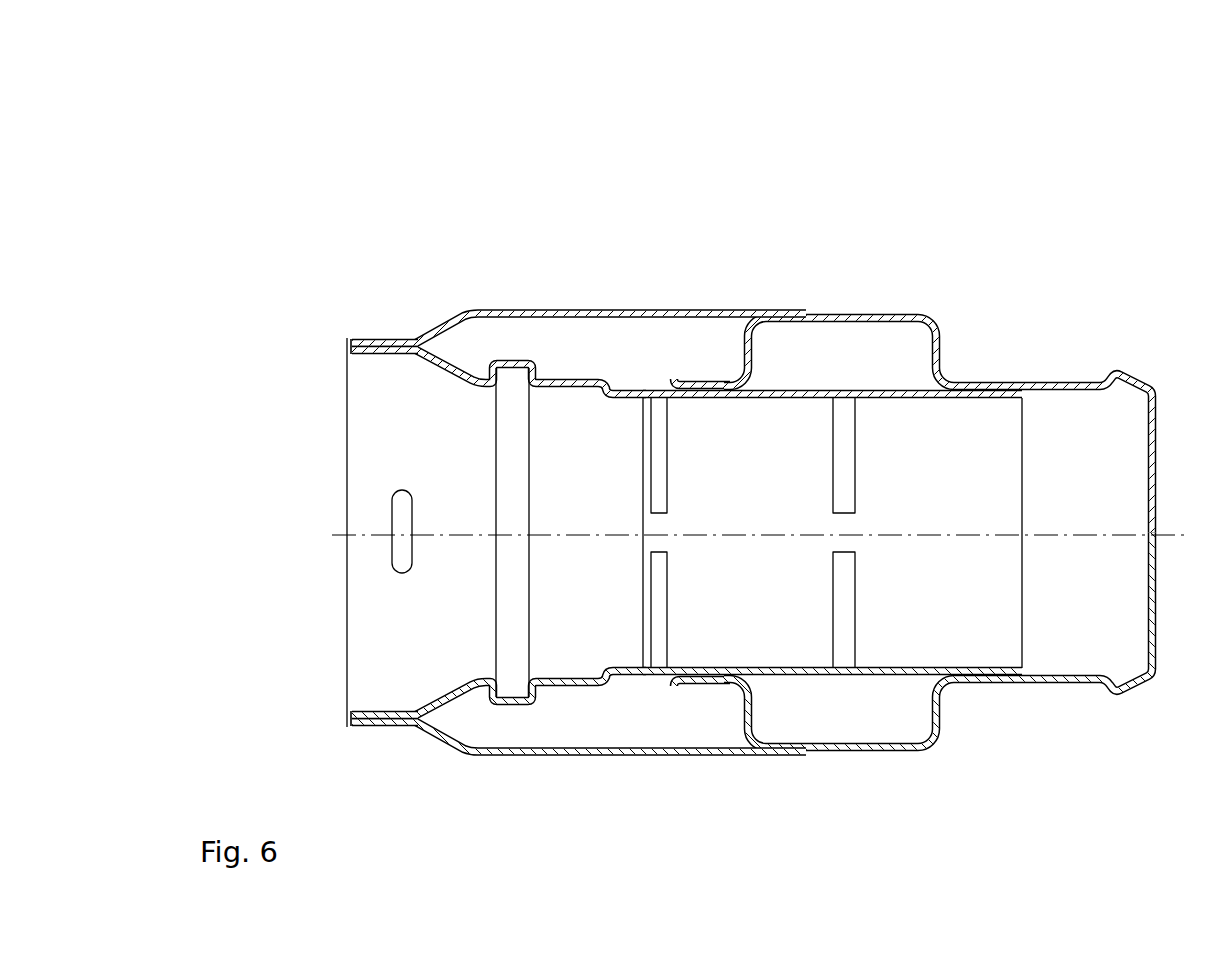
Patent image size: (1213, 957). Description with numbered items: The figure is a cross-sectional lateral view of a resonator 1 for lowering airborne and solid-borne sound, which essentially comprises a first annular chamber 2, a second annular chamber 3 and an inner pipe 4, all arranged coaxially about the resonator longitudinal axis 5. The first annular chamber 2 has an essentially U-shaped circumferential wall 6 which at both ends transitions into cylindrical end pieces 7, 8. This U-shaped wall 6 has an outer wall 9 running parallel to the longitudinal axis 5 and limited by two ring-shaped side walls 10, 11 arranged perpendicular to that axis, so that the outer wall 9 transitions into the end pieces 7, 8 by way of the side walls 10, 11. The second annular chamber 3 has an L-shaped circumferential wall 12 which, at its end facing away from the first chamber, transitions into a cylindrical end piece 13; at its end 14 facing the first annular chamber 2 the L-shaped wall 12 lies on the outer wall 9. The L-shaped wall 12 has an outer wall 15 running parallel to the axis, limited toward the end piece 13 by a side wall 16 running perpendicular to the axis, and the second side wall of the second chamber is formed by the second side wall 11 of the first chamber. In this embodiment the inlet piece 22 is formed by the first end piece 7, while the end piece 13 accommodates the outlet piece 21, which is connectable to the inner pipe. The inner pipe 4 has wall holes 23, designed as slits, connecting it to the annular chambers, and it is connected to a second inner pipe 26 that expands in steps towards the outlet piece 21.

The resonator 1 is at (336, 169).
The first annular chamber 2 is at (798, 355).
The second annular chamber 3 is at (588, 340).
The inner pipe 4 is at (997, 387).
The resonator longitudinal axis 5 is at (375, 537).
The U-shaped circumferential wall 6 is at (917, 315).
The first end piece 7 is at (987, 383).
The second end piece 8 is at (705, 387).
The outer wall 9 is at (830, 317).
The first side wall 10 is at (937, 357).
The second side wall 11 is at (750, 360).
The L-shaped circumferential wall 12 is at (472, 313).
The end piece 13 is at (372, 338).
The end 14 is at (788, 314).
The outer wall 15 is at (572, 309).
The side wall 16 is at (449, 322).
The outlet piece 21 is at (363, 712).
The inlet piece 22 is at (1082, 383).
The wall holes 23 is at (658, 562).
The second inner pipe 26 is at (538, 360).